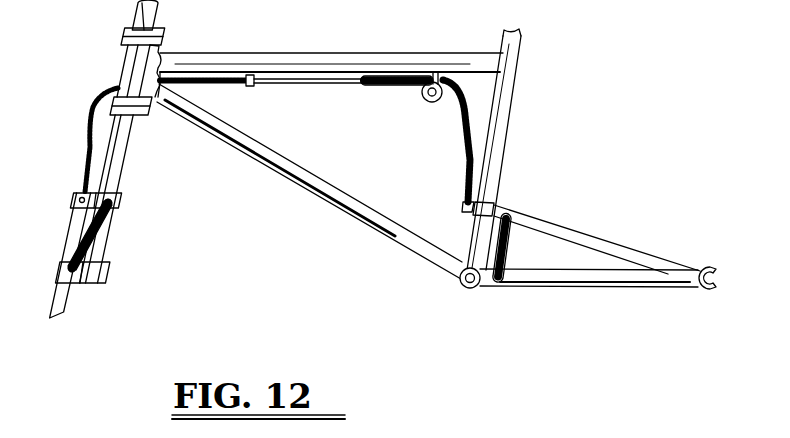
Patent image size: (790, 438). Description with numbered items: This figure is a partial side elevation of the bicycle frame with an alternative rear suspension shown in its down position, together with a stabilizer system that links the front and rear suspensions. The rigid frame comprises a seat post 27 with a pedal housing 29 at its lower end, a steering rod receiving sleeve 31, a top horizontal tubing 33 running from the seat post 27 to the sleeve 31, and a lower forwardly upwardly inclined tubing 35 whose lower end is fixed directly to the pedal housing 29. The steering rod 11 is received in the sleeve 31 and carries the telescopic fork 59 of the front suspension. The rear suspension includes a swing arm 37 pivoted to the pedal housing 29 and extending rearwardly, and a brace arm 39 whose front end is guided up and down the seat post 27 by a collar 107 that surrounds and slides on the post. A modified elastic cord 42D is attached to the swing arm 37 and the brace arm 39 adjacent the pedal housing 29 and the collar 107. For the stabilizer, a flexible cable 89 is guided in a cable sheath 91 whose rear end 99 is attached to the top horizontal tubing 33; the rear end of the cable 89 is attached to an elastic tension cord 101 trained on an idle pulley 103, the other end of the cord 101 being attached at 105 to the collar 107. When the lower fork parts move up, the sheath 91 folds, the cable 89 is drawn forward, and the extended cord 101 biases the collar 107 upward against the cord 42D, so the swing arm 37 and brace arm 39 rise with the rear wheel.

The steering rod 11 is at (147, 16).
The telescopic fork 59 is at (130, 62).
The steering rod receiving sleeve 31 is at (147, 72).
The cable sheath 91 is at (90, 125).
The top horizontal tubing 33 is at (228, 62).
The rear end of cable sheath 99 is at (250, 86).
The flexible cable 89 is at (289, 84).
The idle pulley 103 is at (417, 89).
The elastic tension cord 101 is at (452, 108).
The attachment point of cord to collar 105 is at (467, 205).
The collar 107 is at (466, 220).
The seat post 27 is at (498, 118).
The lower forwardly upwardly inclined tubing 35 is at (347, 200).
The pedal housing 29 is at (470, 288).
The elastic cord 42D is at (513, 253).
The brace arm 39 is at (602, 243).
The swing arm 37 is at (582, 276).